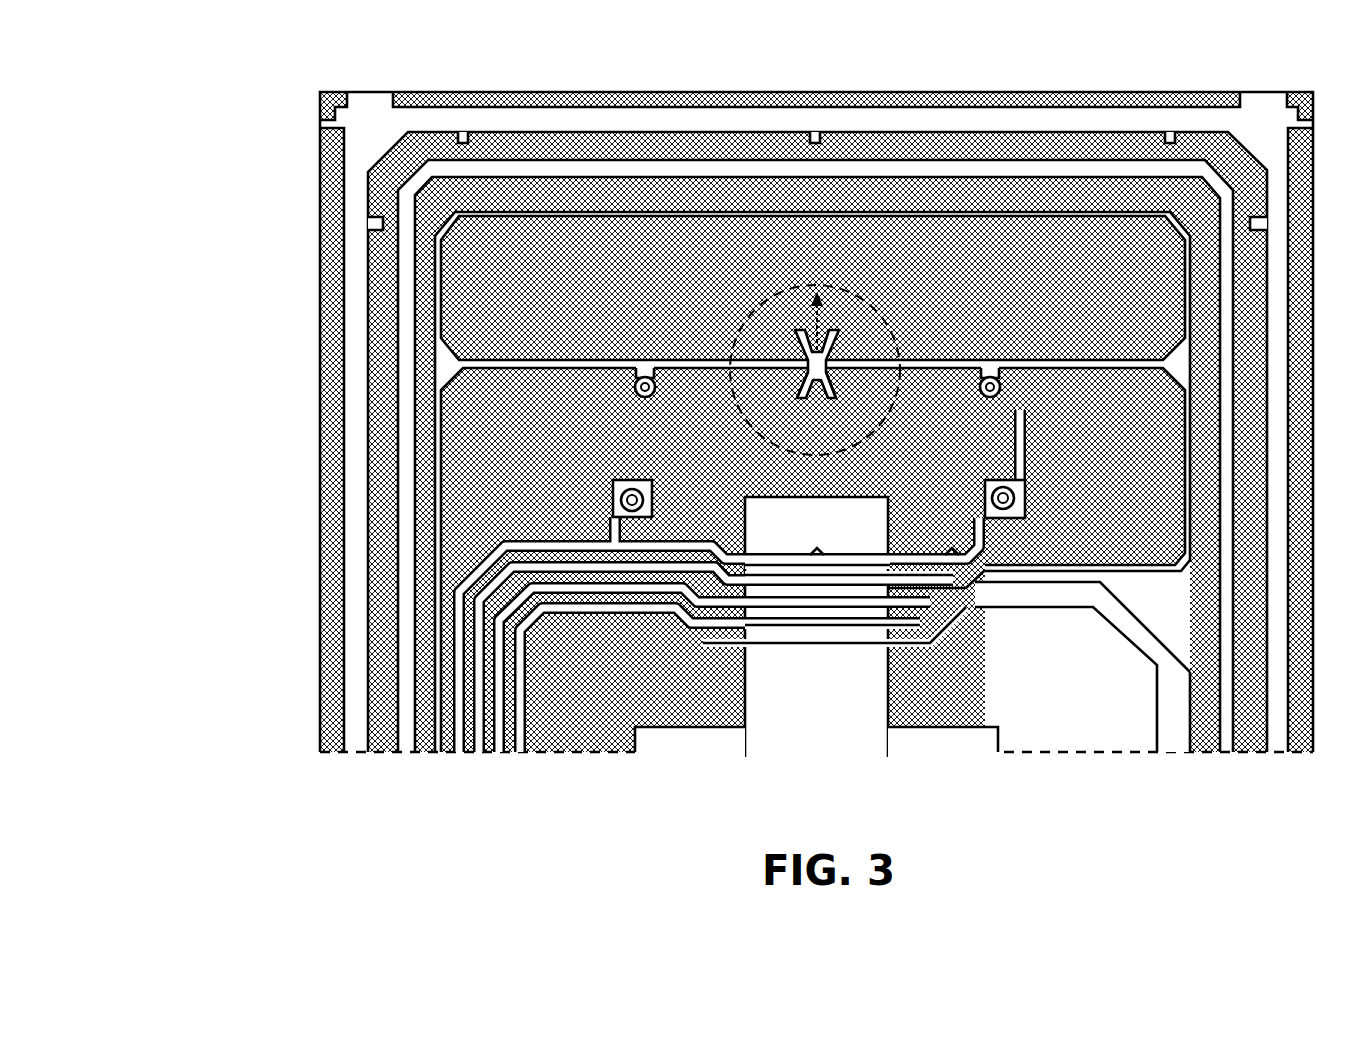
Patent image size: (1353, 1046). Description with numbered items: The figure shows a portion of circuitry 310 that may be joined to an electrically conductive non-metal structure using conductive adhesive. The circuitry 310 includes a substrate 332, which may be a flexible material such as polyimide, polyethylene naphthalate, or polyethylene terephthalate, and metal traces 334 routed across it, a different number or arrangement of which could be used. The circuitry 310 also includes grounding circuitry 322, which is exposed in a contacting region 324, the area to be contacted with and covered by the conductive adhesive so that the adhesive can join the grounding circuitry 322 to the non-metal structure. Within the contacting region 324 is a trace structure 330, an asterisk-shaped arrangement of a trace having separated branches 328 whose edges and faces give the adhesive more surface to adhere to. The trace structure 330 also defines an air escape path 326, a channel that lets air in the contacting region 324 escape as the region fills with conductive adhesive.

The circuitry 310 is at (494, 92).
The grounding circuitry 322 is at (435, 358).
The contacting region 324 is at (757, 325).
The air escape path 326 is at (843, 302).
The separated branches 328 is at (823, 392).
The trace structure 330 is at (802, 377).
The substrate 332 is at (490, 283).
The metal traces 334 is at (507, 733).